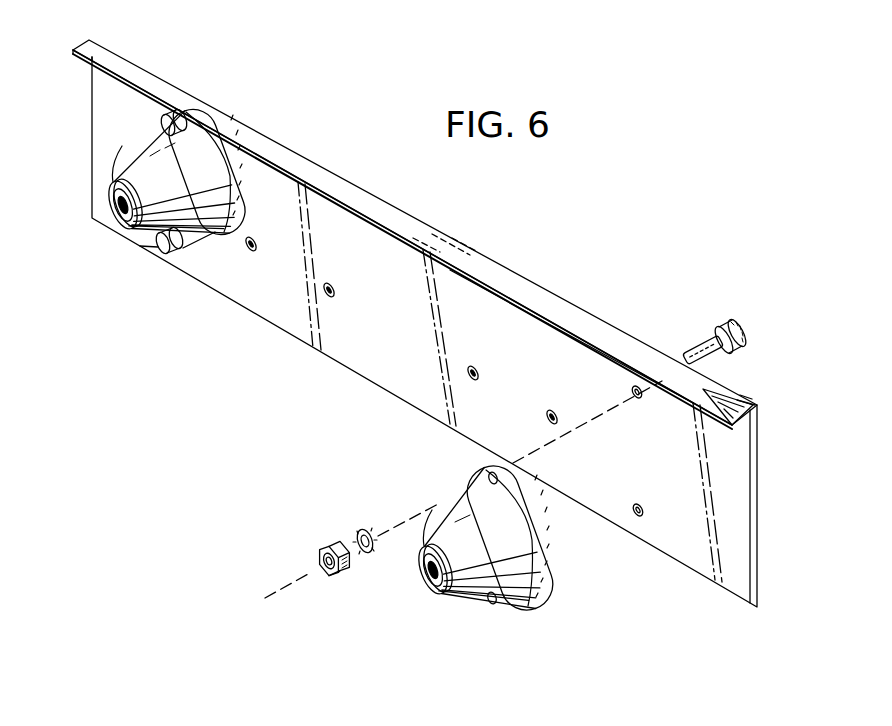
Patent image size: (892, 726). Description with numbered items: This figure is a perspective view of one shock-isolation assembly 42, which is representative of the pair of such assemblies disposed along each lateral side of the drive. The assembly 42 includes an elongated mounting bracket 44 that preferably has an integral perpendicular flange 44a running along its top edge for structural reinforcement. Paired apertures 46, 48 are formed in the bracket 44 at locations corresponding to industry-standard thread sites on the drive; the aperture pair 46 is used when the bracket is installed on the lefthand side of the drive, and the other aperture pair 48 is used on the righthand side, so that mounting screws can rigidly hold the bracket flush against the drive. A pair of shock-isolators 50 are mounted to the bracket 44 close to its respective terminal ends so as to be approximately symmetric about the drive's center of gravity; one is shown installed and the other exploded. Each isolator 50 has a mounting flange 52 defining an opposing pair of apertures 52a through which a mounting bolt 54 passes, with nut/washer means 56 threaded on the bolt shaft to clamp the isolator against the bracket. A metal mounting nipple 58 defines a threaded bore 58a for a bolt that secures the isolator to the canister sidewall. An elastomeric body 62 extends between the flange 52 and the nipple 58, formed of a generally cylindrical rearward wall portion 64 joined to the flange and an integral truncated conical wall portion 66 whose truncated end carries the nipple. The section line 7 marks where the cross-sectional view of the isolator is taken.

The section line 7- 7 is at (173, 72).
The shock-isolation assembly 42 is at (243, 356).
The mounting bracket 44 is at (398, 342).
The perpendicular flange 44a is at (284, 154).
The aperture pair 46 is at (333, 296).
The aperture pair 48 is at (252, 252).
The shock-isolator 50 is at (118, 176).
The mounting flange 52 is at (195, 128).
The apertures 52a is at (487, 478).
The mounting bolt 54 is at (711, 338).
The nut/washer means 56 is at (310, 543).
The mounting nipple 58 is at (133, 232).
The threaded bore 58a is at (115, 210).
The elastomeric body 62 is at (203, 238).
The cylindrical wall portion 64 is at (220, 213).
The truncated conical wall portion 66 is at (125, 162).